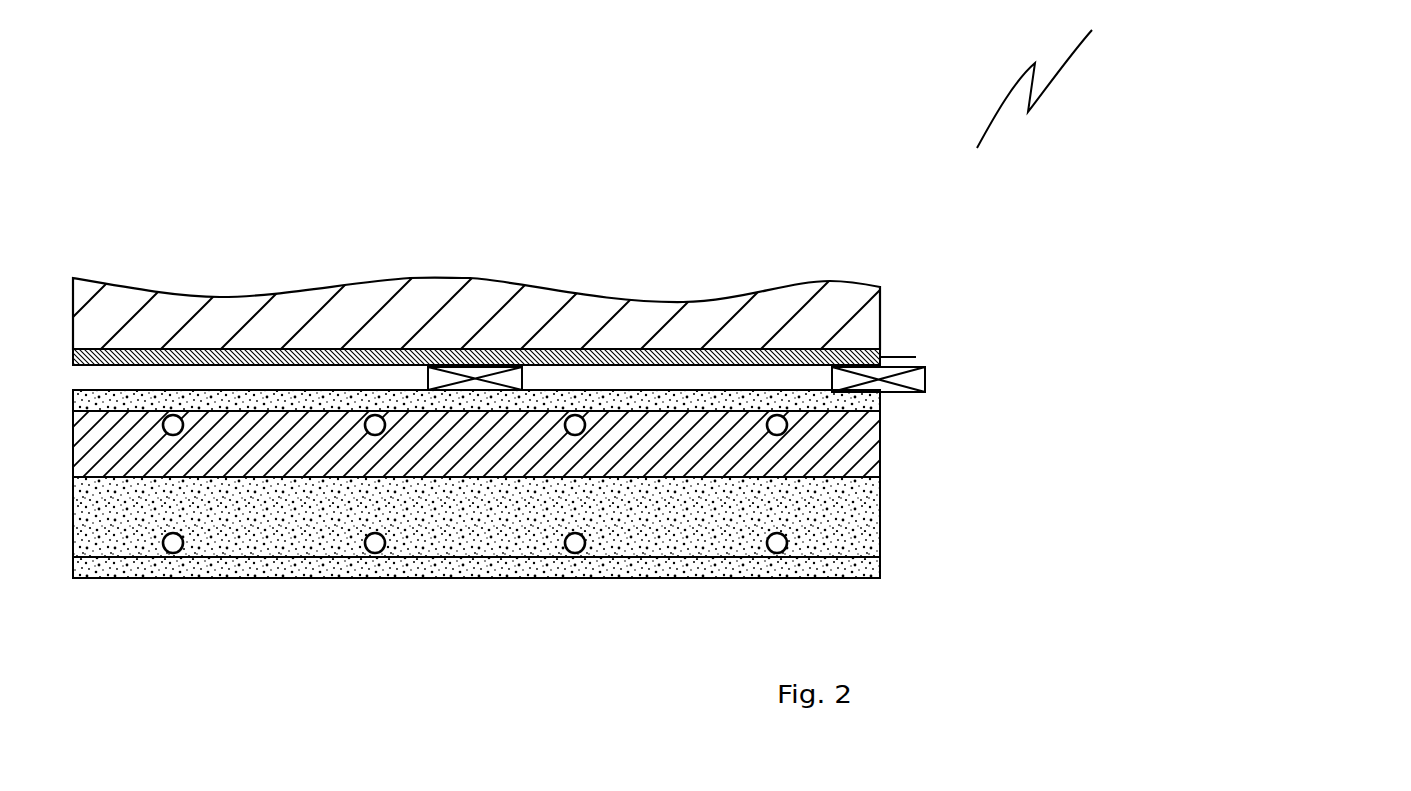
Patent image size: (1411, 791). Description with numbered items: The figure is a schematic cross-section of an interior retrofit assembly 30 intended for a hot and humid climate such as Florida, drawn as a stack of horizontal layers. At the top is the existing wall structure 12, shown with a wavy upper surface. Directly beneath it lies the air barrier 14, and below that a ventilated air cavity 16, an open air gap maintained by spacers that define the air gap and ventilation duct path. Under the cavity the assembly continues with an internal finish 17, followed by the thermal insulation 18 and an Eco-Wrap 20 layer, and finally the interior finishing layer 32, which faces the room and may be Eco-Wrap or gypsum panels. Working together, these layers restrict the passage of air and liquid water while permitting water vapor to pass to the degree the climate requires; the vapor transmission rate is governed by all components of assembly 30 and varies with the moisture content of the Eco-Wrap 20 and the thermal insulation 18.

The existing wall structure 12 is at (528, 307).
The air barrier 14 is at (757, 355).
The ventilated air cavity 16 is at (747, 380).
The internal finish 17 is at (847, 397).
The thermal insulation 18 is at (847, 448).
The Eco-Wrap 20 is at (840, 522).
The interior retrofit assembly 30 is at (1057, 79).
The interior finishing layer 32 is at (833, 567).